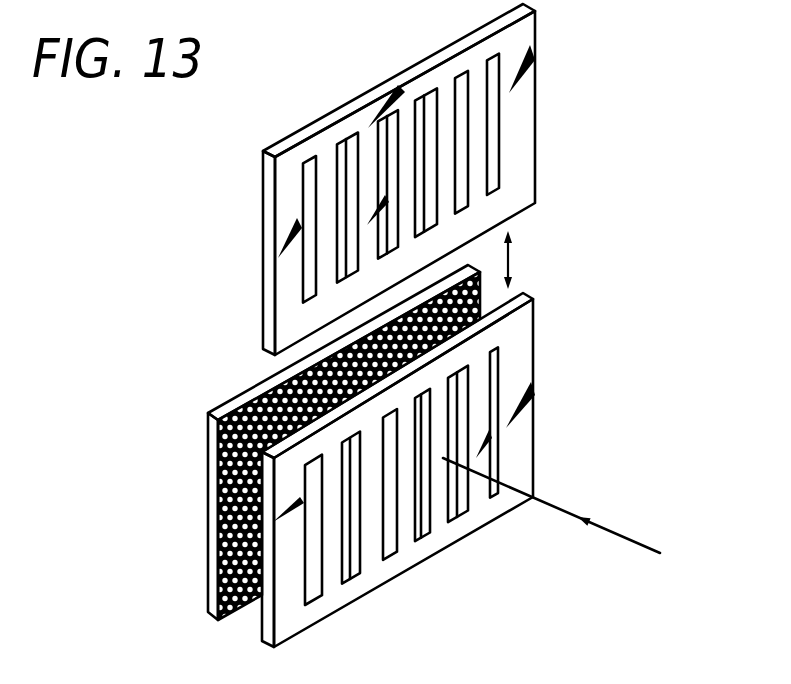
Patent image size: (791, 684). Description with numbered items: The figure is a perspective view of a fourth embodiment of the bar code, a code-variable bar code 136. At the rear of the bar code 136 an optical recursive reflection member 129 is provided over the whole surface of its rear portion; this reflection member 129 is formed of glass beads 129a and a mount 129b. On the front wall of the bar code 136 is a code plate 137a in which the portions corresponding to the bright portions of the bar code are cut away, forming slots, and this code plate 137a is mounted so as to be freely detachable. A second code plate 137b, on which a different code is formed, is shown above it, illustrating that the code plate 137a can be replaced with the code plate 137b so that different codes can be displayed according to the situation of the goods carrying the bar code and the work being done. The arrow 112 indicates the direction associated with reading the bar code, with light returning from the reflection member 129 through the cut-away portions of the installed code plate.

The gas flow direction 112 is at (603, 527).
The optical recursive reflection member 129 is at (261, 442).
The glass beads 129a is at (209, 449).
The mount 129b is at (216, 412).
The code-variable bar code 136 is at (368, 325).
The code plate 137a is at (533, 318).
The code plate 137b is at (528, 123).